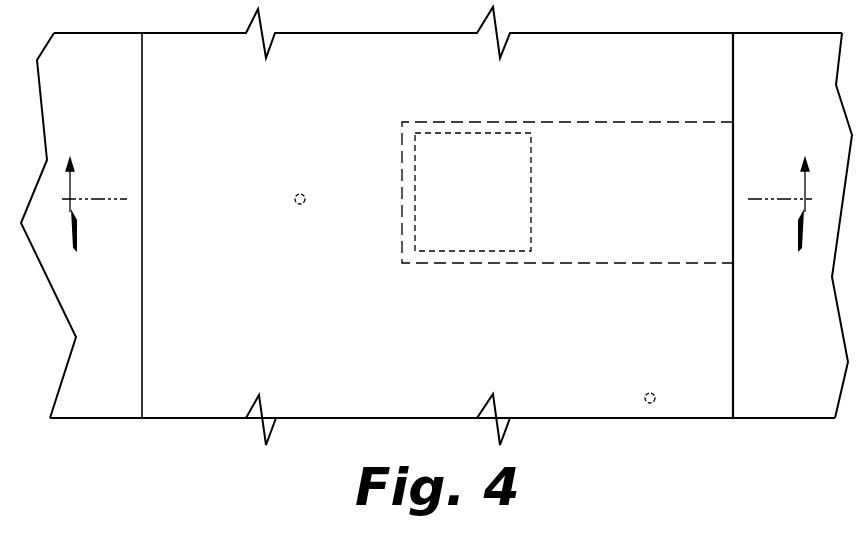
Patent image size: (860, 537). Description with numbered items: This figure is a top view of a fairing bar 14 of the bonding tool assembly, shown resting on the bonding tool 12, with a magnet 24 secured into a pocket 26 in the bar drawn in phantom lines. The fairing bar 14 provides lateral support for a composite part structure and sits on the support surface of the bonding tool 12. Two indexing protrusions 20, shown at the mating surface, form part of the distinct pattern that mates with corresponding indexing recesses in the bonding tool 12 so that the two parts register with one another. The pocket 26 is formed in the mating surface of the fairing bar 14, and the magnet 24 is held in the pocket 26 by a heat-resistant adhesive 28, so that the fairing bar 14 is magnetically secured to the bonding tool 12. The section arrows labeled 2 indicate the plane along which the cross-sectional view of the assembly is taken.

The section line 2- 2 is at (437, 190).
The bonding tool 12 is at (773, 352).
The fairing bar 14 is at (578, 330).
The indexing protrusion 20 is at (303, 204).
The magnet 24 is at (477, 187).
The pocket 26 is at (402, 163).
The heat-resistant adhesive 28 is at (406, 201).